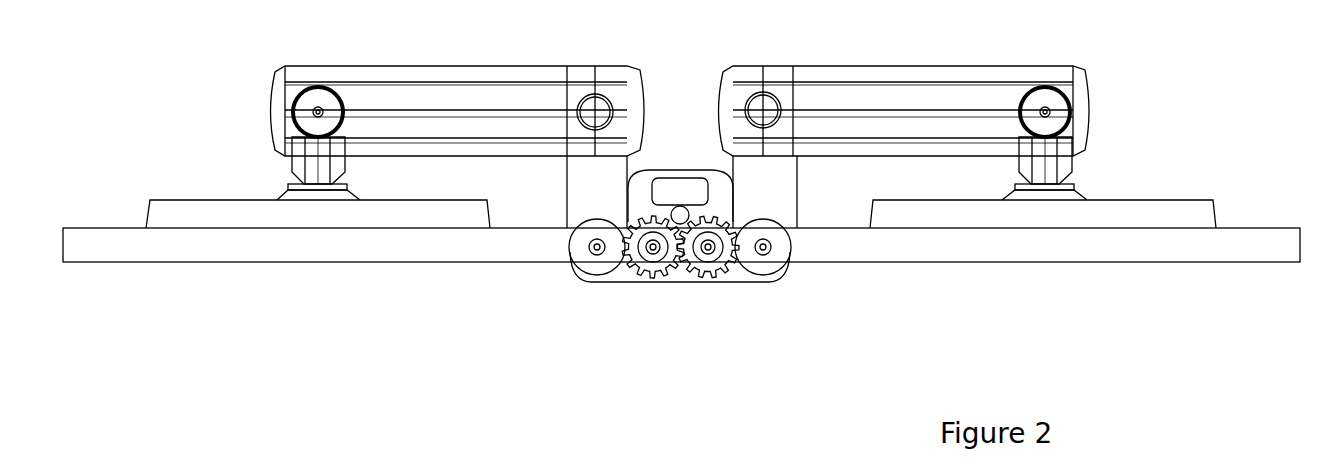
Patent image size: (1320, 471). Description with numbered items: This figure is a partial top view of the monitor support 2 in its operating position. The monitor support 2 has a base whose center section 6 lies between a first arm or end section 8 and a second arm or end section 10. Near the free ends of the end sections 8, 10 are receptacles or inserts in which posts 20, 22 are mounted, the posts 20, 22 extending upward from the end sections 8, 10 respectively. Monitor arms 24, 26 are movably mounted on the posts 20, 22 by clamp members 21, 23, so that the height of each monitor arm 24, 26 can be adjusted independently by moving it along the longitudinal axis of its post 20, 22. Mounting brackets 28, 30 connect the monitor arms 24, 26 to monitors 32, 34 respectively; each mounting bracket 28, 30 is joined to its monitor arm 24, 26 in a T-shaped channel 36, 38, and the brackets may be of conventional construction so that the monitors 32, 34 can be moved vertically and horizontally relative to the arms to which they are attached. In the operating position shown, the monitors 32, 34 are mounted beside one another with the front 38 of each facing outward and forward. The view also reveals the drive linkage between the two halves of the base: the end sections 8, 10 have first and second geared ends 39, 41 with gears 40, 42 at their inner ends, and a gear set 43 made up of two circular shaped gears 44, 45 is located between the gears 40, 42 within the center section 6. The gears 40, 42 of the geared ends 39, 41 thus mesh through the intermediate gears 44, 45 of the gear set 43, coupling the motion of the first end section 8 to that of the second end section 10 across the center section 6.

The monitor support 2 is at (813, 305).
The center section 6 is at (682, 272).
The first arm or end section 8 is at (783, 187).
The second arm or end section 10 is at (575, 181).
The post 20 is at (758, 104).
The clamp member 21 is at (780, 72).
The post 22 is at (601, 108).
The clamp member 23 is at (582, 74).
The monitor arm 24 is at (943, 72).
The monitor arm 26 is at (391, 74).
The mounting bracket 28 is at (1087, 124).
The mounting bracket 30 is at (283, 134).
The monitor 32 is at (953, 262).
The monitor 34 is at (353, 262).
The T-shaped channel 36 is at (878, 112).
The T-shaped channel 38 is at (215, 262).
The first geared end 39 is at (777, 260).
The gear 40 is at (765, 265).
The second geared end 41 is at (574, 276).
The gear 42 is at (617, 270).
The gear set 43 is at (633, 275).
The circular shaped gear 44 is at (720, 270).
The circular shaped gear 45 is at (647, 268).